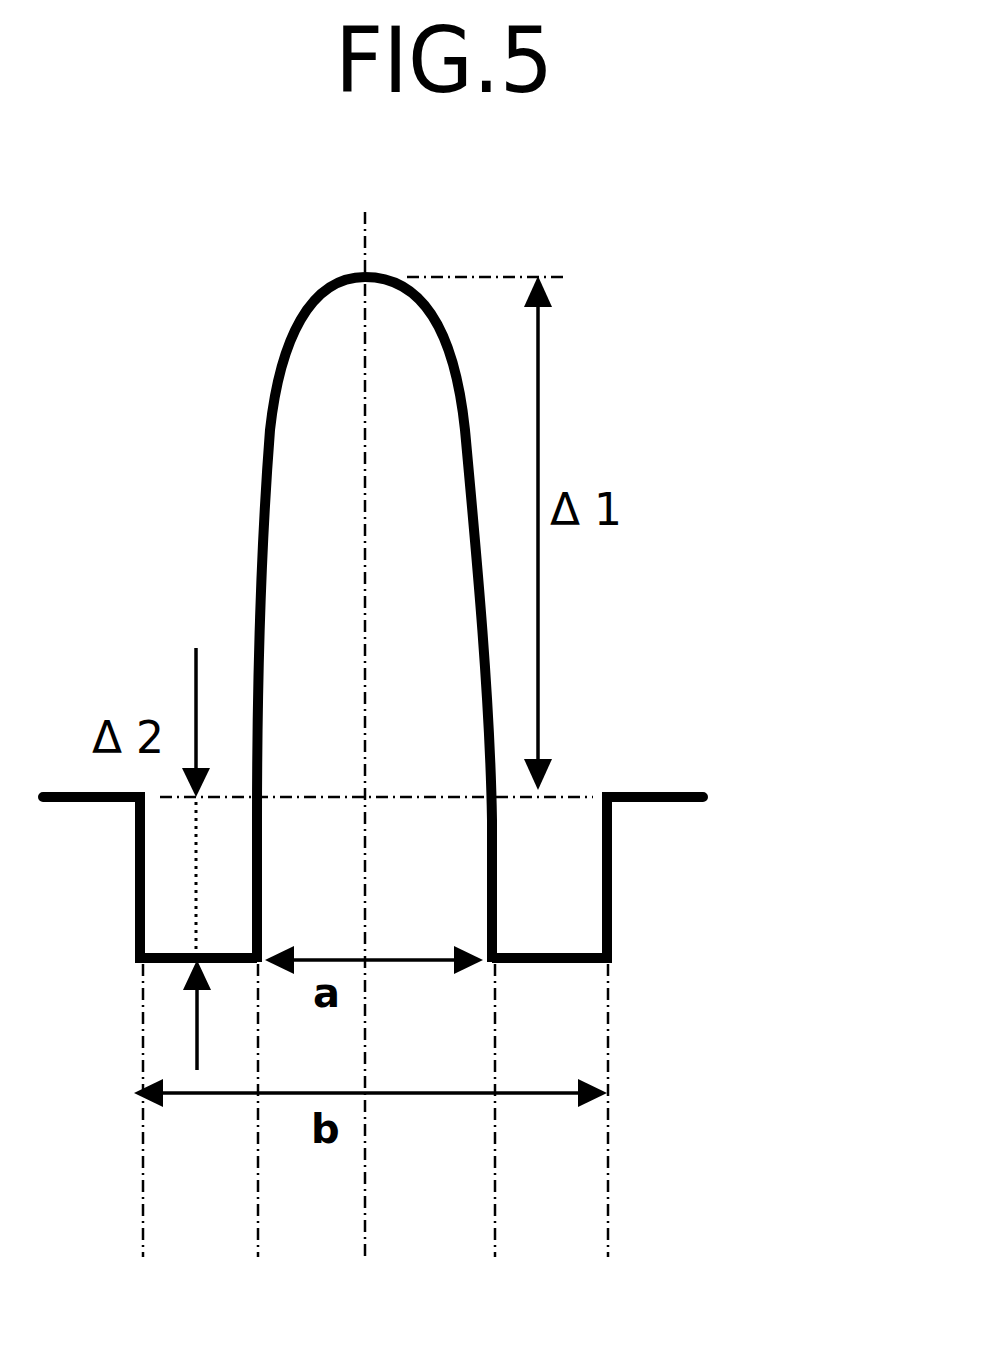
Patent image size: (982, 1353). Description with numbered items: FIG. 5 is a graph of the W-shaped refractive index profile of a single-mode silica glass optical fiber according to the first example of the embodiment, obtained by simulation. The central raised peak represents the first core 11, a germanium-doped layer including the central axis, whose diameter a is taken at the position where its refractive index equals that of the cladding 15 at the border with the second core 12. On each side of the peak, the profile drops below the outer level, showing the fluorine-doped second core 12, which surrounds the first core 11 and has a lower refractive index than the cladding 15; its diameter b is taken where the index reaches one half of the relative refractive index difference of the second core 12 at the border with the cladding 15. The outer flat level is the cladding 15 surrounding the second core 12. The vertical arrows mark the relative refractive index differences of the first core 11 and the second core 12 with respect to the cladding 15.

The first core 11 is at (450, 1025).
The second core 12 is at (555, 1057).
The cladding 15 is at (633, 1137).